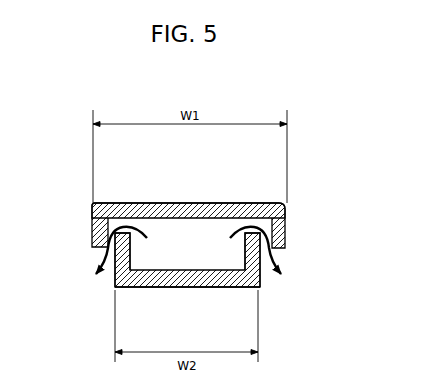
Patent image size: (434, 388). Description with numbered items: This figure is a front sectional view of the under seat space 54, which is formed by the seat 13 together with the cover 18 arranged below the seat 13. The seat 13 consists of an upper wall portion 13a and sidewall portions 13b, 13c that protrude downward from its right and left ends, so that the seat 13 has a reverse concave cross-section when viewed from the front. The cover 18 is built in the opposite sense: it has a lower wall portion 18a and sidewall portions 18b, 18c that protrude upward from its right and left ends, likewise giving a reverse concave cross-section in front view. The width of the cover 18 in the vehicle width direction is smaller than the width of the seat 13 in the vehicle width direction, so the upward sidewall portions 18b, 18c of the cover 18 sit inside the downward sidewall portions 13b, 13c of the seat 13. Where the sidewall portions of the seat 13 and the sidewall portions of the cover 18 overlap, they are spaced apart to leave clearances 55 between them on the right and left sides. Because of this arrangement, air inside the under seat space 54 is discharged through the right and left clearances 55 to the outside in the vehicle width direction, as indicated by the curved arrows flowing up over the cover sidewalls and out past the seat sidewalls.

The seat 13 is at (182, 203).
The upper wall portion 13a is at (227, 203).
The sidewall portion 13b is at (90, 220).
The sidewall portion 13c is at (288, 216).
The clearance 55 is at (110, 228).
The cover 18 is at (192, 289).
The lower wall portion 18a is at (236, 289).
The sidewall portion 18b is at (110, 276).
The sidewall portion 18c is at (265, 276).
The under seat space 54 is at (173, 248).